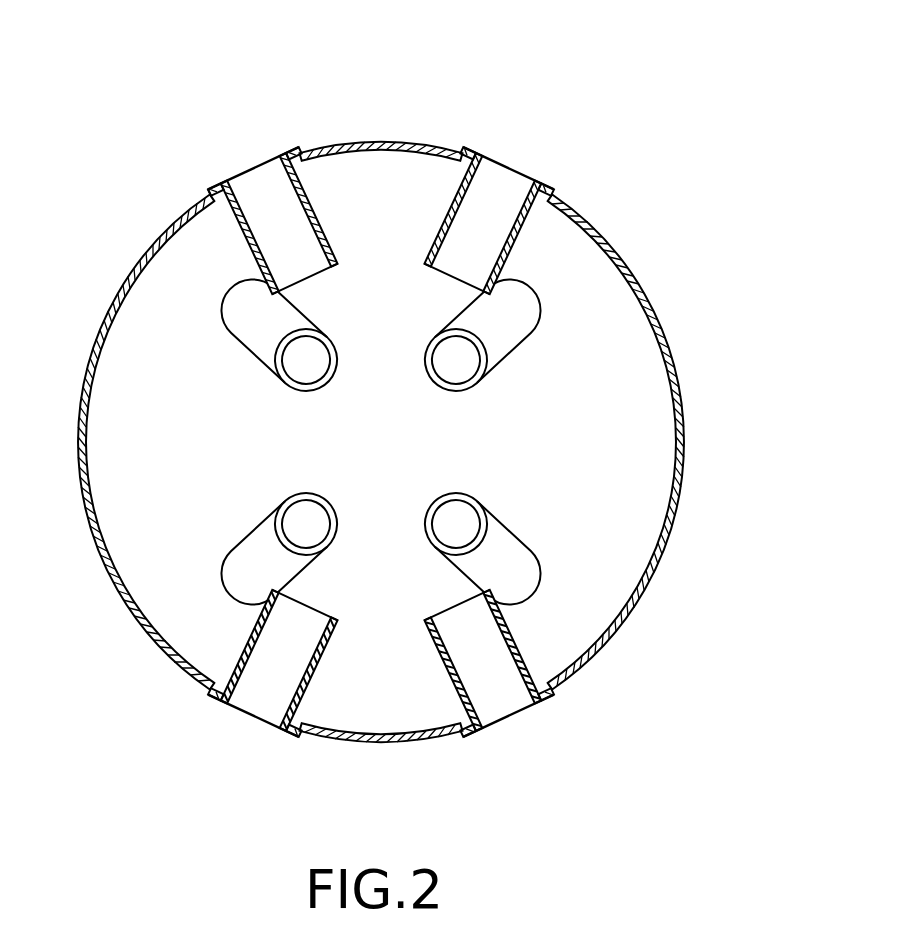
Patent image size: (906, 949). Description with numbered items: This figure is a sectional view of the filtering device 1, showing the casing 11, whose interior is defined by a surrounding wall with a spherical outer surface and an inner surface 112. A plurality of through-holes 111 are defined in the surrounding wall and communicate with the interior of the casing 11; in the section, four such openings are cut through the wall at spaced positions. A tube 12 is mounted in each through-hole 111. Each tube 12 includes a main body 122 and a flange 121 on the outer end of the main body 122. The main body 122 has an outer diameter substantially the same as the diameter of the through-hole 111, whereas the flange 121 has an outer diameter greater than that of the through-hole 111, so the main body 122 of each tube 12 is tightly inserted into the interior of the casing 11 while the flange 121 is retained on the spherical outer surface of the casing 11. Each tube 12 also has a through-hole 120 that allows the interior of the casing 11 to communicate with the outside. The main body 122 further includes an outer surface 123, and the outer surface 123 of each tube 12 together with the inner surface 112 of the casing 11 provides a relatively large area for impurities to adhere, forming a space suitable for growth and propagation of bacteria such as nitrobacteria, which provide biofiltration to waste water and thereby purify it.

The lamp holder assembly 1 is at (382, 442).
The casing 11 is at (398, 405).
The through-hole 111 is at (212, 193).
The inner surface 112 is at (634, 283).
The tube 12 is at (392, 442).
The through-hole 120 is at (262, 175).
The flange 121 is at (208, 183).
The main body 122 is at (322, 233).
The outer surface 123 is at (530, 228).